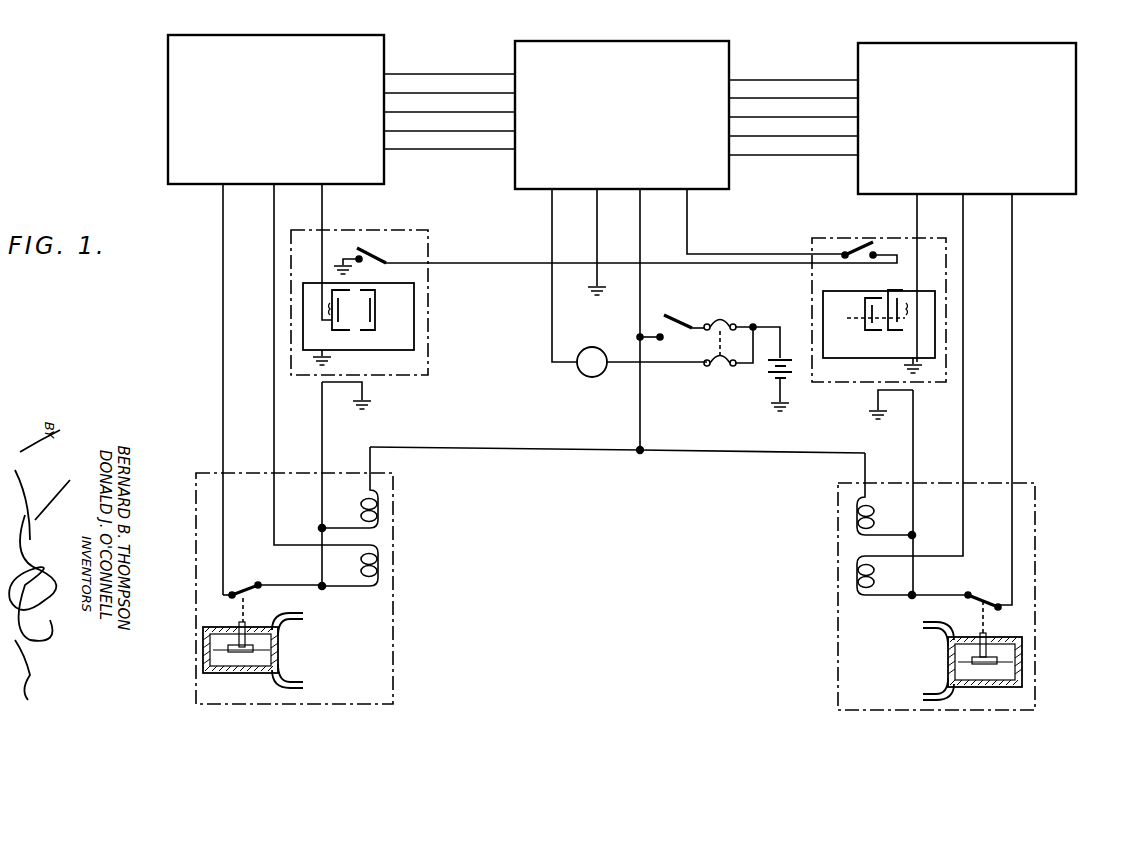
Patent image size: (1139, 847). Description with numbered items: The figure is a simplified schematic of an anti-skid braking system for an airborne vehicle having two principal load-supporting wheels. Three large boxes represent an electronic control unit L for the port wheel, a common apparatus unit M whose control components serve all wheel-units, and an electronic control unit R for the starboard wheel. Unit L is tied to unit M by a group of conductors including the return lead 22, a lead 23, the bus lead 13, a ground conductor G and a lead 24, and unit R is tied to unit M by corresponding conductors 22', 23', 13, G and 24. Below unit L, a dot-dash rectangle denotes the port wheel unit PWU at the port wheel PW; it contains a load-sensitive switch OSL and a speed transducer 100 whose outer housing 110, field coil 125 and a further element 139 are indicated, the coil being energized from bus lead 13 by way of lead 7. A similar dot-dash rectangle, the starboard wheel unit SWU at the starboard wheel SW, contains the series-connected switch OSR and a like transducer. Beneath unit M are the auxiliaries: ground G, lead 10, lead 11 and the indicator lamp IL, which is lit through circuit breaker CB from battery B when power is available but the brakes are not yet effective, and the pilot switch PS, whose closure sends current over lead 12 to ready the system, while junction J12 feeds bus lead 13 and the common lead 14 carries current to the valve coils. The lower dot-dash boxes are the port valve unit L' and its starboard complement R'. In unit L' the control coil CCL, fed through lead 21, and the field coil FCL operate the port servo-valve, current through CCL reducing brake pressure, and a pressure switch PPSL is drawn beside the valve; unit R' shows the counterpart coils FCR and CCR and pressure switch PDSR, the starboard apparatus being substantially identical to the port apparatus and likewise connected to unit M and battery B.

The electronic control unit L is at (276, 109).
The apparatus unit M is at (622, 115).
The electronic control unit R is at (967, 118).
The return lead 22 is at (346, 318).
The conductor 23 is at (449, 86).
The bus lead 13 is at (456, 112).
The ground G is at (464, 129).
The conductor 24 is at (454, 150).
The conductor 22' is at (793, 66).
The conductor 23' is at (793, 91).
The lead 21 is at (274, 380).
The lead 7 is at (322, 208).
The lead 11 is at (550, 305).
The lead 10 is at (598, 272).
The lead 12 is at (645, 236).
The port wheel unit PWU is at (422, 231).
The load-sensitive switch OSL is at (370, 250).
The port wheel PW is at (414, 330).
The outer housing 110 is at (343, 293).
The relay contact 139 is at (378, 300).
The field coil 125 is at (338, 308).
The speed transducer 100 is at (412, 345).
The indicator lamp IL is at (642, 362).
The pilot switch PS is at (670, 312).
The circuit breaker CB is at (725, 318).
The battery B is at (763, 392).
The junction J12 is at (638, 450).
The common lead 14 is at (592, 451).
The starboard wheel unit SWU is at (820, 237).
The load-sensitive switch OSR is at (862, 240).
The starboard wheel SW is at (935, 318).
The port valve unit L' is at (315, 588).
The field coil FCL is at (378, 508).
The control coil CCL is at (378, 567).
The pressure switch left PPSL is at (262, 592).
The starboard valve unit R' is at (899, 596).
The field coil right FCR is at (855, 515).
The control coil right CCR is at (855, 567).
The pressure switch right PDSR is at (1004, 620).